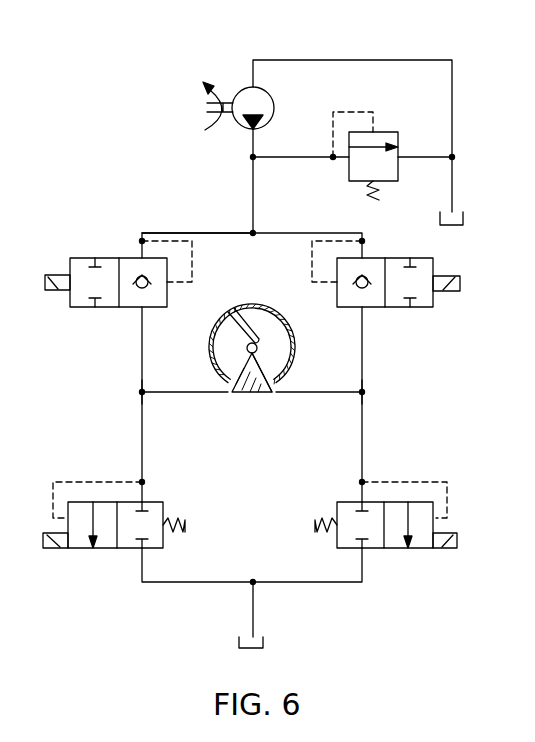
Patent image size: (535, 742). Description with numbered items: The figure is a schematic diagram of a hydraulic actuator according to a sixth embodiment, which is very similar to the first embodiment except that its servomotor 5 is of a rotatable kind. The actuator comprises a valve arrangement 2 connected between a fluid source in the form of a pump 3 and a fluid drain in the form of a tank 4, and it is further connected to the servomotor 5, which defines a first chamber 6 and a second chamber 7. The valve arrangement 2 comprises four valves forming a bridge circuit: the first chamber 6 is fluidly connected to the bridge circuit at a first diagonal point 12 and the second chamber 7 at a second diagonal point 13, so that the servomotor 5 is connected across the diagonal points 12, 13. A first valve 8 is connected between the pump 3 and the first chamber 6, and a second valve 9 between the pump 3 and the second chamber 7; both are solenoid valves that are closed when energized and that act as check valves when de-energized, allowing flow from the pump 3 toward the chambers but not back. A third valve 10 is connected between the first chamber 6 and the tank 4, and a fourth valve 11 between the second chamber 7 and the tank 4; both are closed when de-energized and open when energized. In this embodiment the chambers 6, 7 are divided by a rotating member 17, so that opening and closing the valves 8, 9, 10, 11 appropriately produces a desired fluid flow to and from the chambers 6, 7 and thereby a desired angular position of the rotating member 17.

The valve arrangement 2 is at (163, 231).
The pump 3 is at (240, 86).
The tank 4 is at (262, 650).
The servomotor 5 is at (263, 306).
The first chamber 6 is at (228, 353).
The second chamber 7 is at (278, 357).
The first valve 8 is at (110, 308).
The second valve 9 is at (400, 258).
The third valve 10 is at (102, 502).
The fourth valve 11 is at (397, 502).
The first diagonal point 12 is at (140, 392).
The second diagonal point 13 is at (364, 391).
The rotating member 17 is at (238, 327).